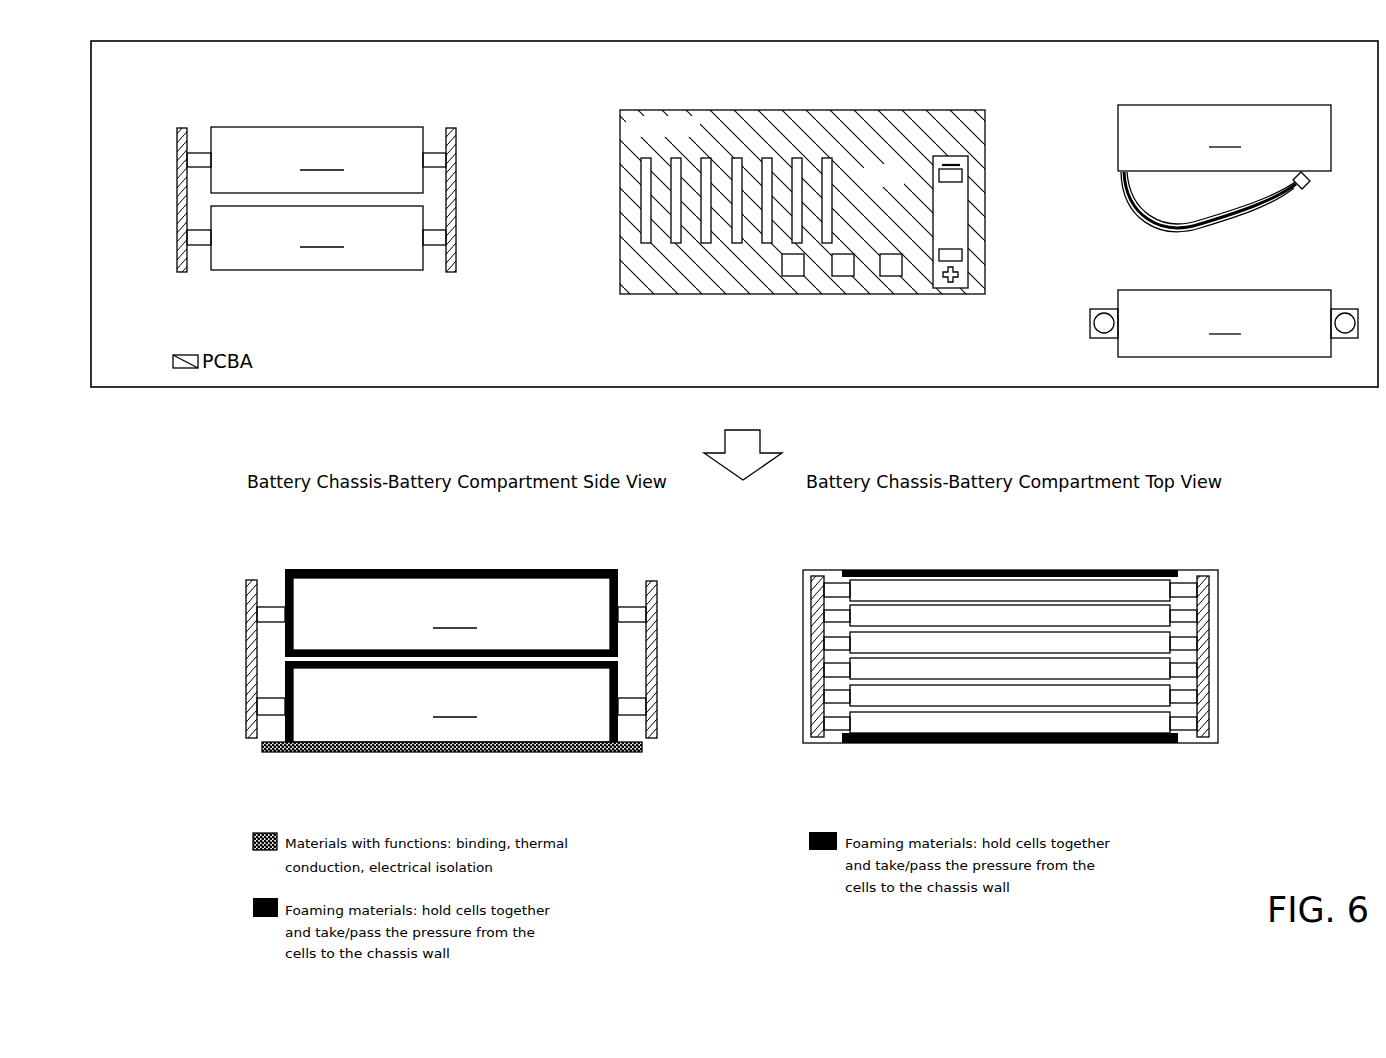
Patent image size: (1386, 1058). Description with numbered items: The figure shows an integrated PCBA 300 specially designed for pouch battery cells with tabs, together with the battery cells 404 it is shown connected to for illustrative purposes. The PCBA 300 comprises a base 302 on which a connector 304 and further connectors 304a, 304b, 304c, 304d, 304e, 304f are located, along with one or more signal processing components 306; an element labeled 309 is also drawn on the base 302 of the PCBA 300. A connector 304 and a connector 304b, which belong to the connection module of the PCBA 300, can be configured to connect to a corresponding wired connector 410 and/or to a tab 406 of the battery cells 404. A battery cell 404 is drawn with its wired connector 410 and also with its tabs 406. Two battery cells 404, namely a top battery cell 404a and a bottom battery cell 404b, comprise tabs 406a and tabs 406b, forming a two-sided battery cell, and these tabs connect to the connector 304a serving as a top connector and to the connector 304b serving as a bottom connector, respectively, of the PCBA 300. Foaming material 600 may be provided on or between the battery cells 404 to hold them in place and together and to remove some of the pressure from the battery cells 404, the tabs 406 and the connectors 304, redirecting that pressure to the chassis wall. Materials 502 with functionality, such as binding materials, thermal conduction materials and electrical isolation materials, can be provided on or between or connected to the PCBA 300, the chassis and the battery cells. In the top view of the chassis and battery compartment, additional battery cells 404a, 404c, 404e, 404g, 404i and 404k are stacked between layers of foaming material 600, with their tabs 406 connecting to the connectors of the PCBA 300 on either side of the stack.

The integrated PCBA 300 is at (177, 222).
The base 302 is at (899, 185).
The connector 304 is at (617, 264).
The top connector 304a is at (640, 200).
The bottom connector 304b is at (677, 244).
The connector 304c is at (703, 157).
The connector 304d is at (738, 244).
The connector 304e is at (765, 157).
The connector 304f is at (825, 157).
The signal processing component 306 is at (891, 277).
The battery terminal connector 309 is at (964, 176).
The battery cell 404 is at (1187, 745).
The top battery cell 404a is at (1152, 721).
The bottom battery cell 404b is at (410, 474).
The battery cell 404c is at (1152, 694).
The battery cell 404e is at (1152, 668).
The battery cell 404g is at (1152, 641).
The battery cell 404i is at (1152, 614).
The battery cell 404k is at (1105, 590).
The tab 406 is at (1102, 308).
The tab 406a is at (197, 151).
The tab 406b is at (197, 248).
The wired connector 410 is at (1230, 230).
The materials with functionality 502 is at (413, 753).
The foaming material 600 is at (377, 569).